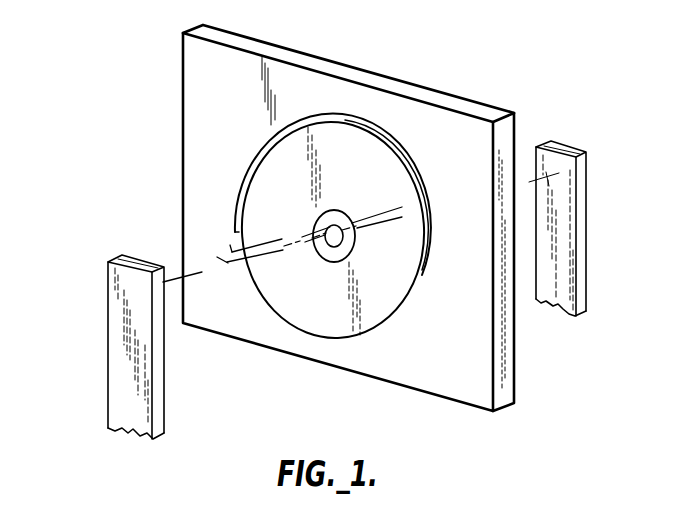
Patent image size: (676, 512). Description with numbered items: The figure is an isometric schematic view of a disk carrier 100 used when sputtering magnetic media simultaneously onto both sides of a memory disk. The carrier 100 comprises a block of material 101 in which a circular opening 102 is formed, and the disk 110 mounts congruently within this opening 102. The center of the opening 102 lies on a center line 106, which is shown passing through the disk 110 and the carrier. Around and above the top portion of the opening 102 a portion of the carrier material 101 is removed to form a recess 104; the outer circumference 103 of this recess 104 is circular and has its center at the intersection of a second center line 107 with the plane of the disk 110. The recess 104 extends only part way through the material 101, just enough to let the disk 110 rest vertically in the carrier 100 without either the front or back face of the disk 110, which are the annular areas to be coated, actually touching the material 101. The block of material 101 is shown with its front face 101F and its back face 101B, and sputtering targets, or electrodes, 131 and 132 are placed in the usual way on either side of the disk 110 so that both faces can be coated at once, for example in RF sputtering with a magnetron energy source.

The carrier 100 is at (112, 75).
The block of material 101 is at (366, 222).
The front face of panel 101F is at (464, 368).
The back face of panel 101B is at (516, 345).
The opening 102 is at (278, 314).
The outer circumference 103 is at (257, 145).
The recess 104 is at (250, 170).
The center line 106 is at (223, 261).
The center line 107 is at (231, 249).
The disk 110 is at (361, 160).
The sputtering target 131 is at (125, 309).
The sputtering target 132 is at (581, 208).